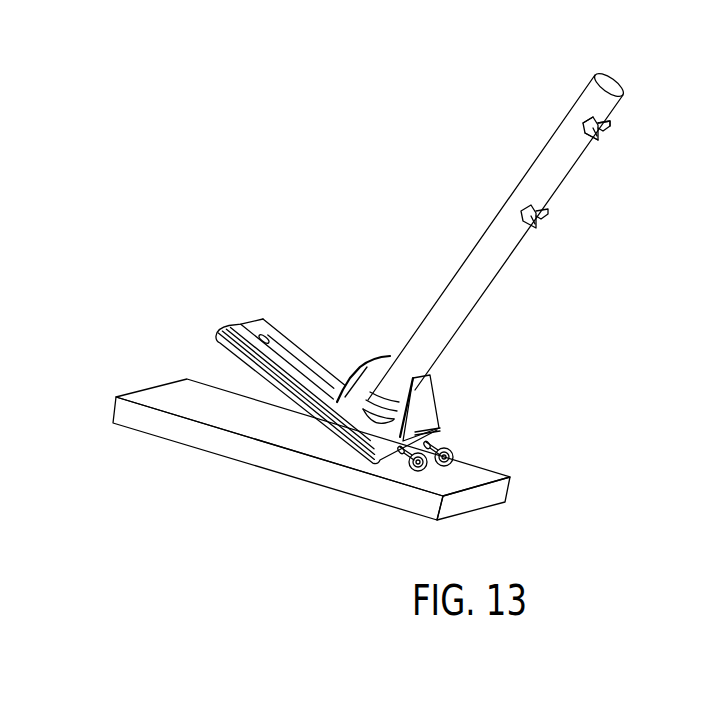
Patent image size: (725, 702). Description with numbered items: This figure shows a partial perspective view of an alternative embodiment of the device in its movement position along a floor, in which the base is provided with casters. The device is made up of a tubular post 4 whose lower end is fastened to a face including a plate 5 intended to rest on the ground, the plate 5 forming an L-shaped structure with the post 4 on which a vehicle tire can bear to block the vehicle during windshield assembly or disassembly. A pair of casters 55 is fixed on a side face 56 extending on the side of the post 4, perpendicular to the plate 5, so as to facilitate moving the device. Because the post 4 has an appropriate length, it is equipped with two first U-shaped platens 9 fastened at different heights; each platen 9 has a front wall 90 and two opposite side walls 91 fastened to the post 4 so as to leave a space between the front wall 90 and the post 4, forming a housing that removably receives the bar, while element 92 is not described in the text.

The tubular post 4 is at (448, 292).
The plate 5 is at (300, 407).
The first U-shaped platen 9 is at (609, 130).
The casters 55 is at (455, 471).
The side face 56 is at (288, 363).
The front wall 90 is at (594, 140).
The side walls 91 is at (588, 128).
The clip hook 92 is at (603, 122).